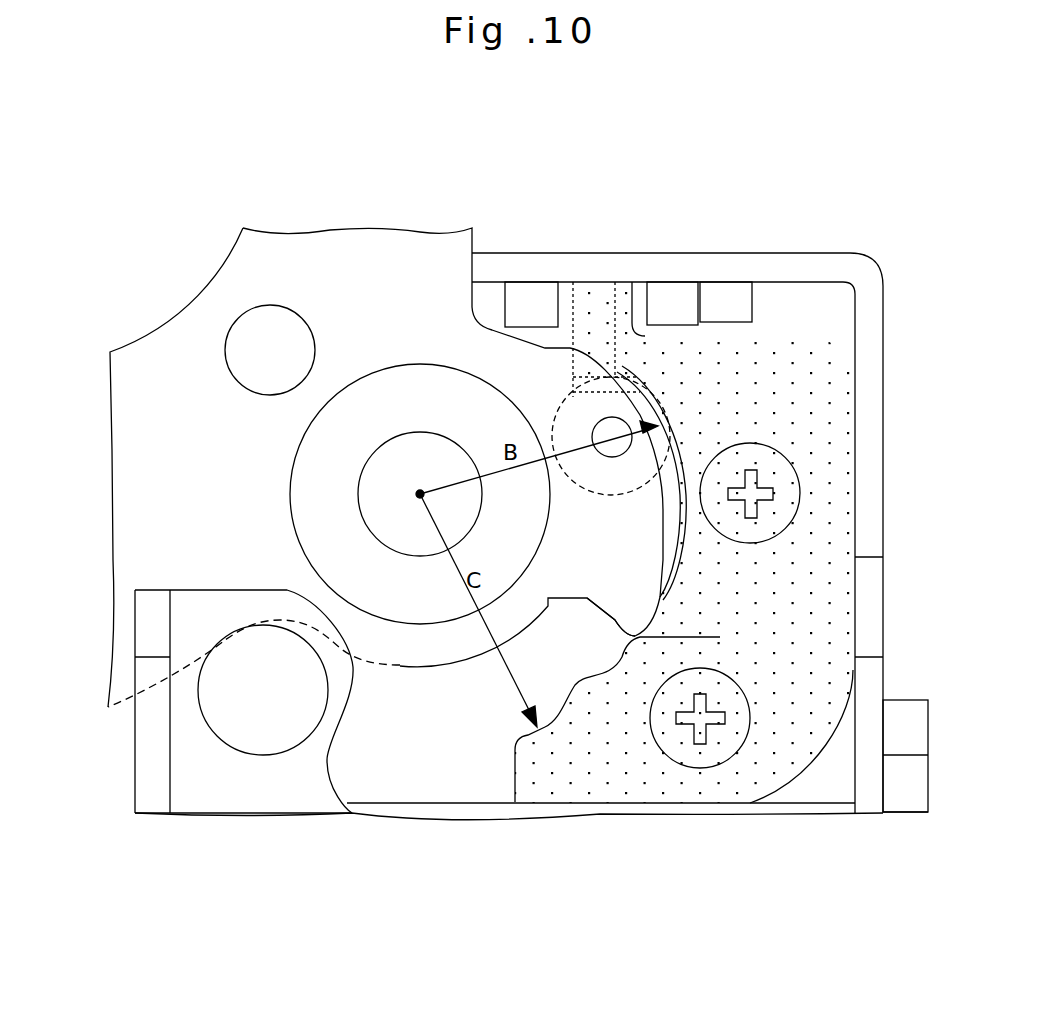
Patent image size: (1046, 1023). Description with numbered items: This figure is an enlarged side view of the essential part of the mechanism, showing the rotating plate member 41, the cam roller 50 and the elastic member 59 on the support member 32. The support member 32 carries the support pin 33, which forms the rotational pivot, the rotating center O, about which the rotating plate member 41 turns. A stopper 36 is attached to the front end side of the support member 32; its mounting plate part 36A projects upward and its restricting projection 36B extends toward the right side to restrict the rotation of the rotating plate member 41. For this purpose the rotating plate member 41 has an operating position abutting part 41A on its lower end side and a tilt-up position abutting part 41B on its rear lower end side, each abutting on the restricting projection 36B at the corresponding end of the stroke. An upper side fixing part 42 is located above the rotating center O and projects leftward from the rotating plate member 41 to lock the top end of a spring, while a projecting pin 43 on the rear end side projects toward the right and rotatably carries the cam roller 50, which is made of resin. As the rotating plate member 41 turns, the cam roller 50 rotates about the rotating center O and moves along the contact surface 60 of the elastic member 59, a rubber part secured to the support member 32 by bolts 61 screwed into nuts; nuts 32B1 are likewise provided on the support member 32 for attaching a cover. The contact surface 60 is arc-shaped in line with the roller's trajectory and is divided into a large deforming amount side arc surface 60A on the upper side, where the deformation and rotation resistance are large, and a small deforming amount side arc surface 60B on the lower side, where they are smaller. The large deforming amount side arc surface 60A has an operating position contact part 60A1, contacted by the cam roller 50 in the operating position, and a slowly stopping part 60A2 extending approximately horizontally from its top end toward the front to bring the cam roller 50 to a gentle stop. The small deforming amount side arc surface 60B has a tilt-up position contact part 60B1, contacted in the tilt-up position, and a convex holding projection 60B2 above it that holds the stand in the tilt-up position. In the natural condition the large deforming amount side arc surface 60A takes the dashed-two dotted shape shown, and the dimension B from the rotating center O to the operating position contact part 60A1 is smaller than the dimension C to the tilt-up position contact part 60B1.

The support member 32 is at (860, 411).
The nut 32B1 is at (905, 782).
The support pin 33 is at (358, 472).
The stopper 36 is at (205, 770).
The mounting plate part 36A is at (228, 780).
The restricting projection 36B is at (302, 745).
The rotating plate member 41 is at (387, 335).
The operating position abutting part 41A is at (210, 640).
The tilt-up position abutting part 41B is at (613, 623).
The upper side fixing part 42 is at (270, 350).
The projecting pin 43 is at (603, 457).
The cam roller 50 is at (628, 382).
The elastic member 59 is at (753, 568).
The contact surface 60 is at (707, 461).
The large deforming amount side arc surface 60A is at (685, 432).
The operating position contact part 60A1 is at (672, 425).
The slowly stopping part 60A2 is at (615, 375).
The small deforming amount side arc surface 60B is at (647, 637).
The tilt-up position contact part 60B1 is at (540, 727).
The holding projection 60B2 is at (577, 690).
The bolt 61 is at (750, 528).